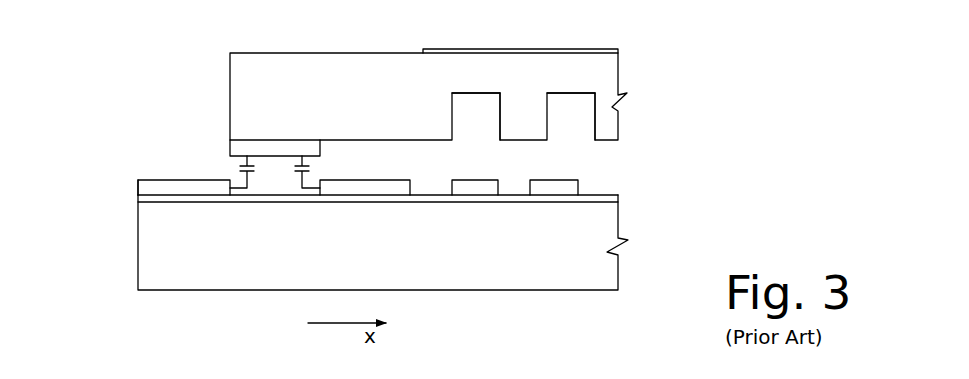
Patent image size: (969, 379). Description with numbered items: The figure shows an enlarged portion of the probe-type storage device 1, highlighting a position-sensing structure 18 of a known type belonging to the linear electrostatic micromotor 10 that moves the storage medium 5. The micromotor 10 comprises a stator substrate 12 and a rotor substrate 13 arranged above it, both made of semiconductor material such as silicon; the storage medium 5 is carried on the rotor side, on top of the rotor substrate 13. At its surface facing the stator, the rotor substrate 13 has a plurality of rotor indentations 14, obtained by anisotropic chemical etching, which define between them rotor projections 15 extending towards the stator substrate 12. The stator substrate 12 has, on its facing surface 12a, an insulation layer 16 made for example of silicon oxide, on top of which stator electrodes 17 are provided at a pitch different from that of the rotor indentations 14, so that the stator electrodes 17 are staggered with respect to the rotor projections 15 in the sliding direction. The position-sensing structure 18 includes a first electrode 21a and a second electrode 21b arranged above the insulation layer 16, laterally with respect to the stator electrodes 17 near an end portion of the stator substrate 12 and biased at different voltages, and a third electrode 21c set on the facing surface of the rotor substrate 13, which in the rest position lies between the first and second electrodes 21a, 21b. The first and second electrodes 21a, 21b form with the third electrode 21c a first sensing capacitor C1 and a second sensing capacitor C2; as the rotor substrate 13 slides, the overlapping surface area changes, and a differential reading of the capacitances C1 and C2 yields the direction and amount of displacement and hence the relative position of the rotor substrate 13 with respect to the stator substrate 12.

The storage device 1 is at (480, 100).
The storage medium 5 is at (599, 48).
The micromotor 10 is at (423, 212).
The stator substrate 12 is at (155, 272).
The facing surface 12a is at (143, 194).
The rotor substrate 13 is at (607, 80).
The rotor indentations 14 is at (496, 115).
The rotor projections 15 is at (538, 108).
The insulation layer 16 is at (612, 195).
The stator electrodes 17 is at (548, 187).
The position-sensing structure 18 is at (100, 162).
The first electrode 21a is at (163, 190).
The second electrode 21b is at (366, 190).
The third electrode 21c is at (237, 148).
The first sensing capacitor C1 is at (242, 167).
The second sensing capacitor C2 is at (309, 168).